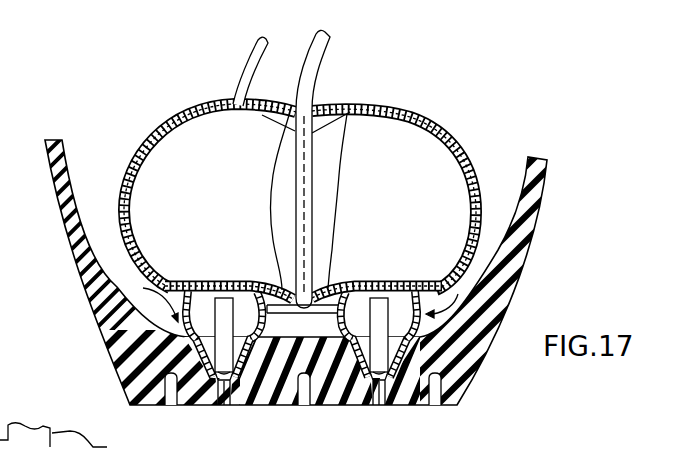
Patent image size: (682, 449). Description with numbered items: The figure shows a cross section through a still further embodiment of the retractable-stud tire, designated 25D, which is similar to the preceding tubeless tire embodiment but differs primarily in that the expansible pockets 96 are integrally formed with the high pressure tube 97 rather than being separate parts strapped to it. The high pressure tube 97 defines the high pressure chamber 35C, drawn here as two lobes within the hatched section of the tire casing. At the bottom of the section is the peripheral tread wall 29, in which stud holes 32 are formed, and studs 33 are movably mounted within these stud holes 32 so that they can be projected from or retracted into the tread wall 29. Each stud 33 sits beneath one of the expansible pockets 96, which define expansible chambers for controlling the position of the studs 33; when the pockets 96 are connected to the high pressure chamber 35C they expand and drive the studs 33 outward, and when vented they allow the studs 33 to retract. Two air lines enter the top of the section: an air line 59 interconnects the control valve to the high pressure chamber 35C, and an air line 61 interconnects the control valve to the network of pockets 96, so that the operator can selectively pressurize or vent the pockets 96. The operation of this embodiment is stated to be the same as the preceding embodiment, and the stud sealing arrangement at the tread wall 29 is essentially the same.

The tire embodiment 25D is at (341, 224).
The tread wall 29 is at (408, 394).
The stud holes 32 is at (229, 407).
The studs 33 is at (206, 407).
The high pressure chamber 35C is at (236, 198).
The air line 59 is at (248, 58).
The air line 61 is at (330, 53).
The expansible pockets 96 is at (294, 297).
The high pressure tube 97 is at (304, 176).